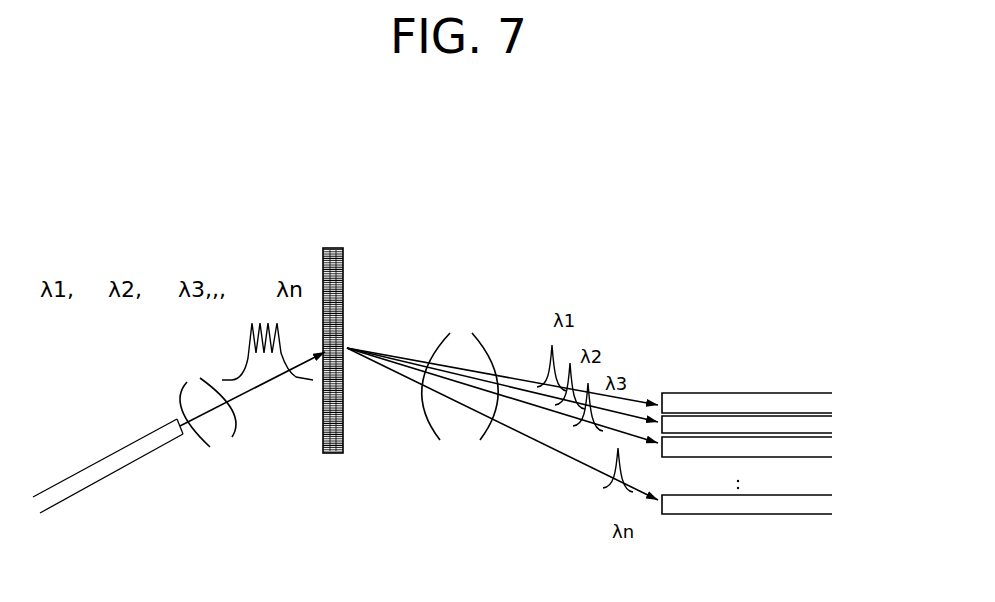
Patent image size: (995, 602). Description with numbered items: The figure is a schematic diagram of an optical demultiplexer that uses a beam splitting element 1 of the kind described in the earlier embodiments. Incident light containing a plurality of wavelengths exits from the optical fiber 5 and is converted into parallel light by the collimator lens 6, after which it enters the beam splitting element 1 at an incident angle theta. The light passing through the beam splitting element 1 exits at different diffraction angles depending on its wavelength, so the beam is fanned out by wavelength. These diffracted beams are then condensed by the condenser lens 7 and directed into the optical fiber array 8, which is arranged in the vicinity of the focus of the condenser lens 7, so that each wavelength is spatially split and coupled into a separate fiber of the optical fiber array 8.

The beam splitting element 1 is at (338, 248).
The optical fiber 5 is at (112, 480).
The collimator lens 6 is at (270, 443).
The condenser lens 7 is at (508, 462).
The optical fiber array 8 is at (845, 365).